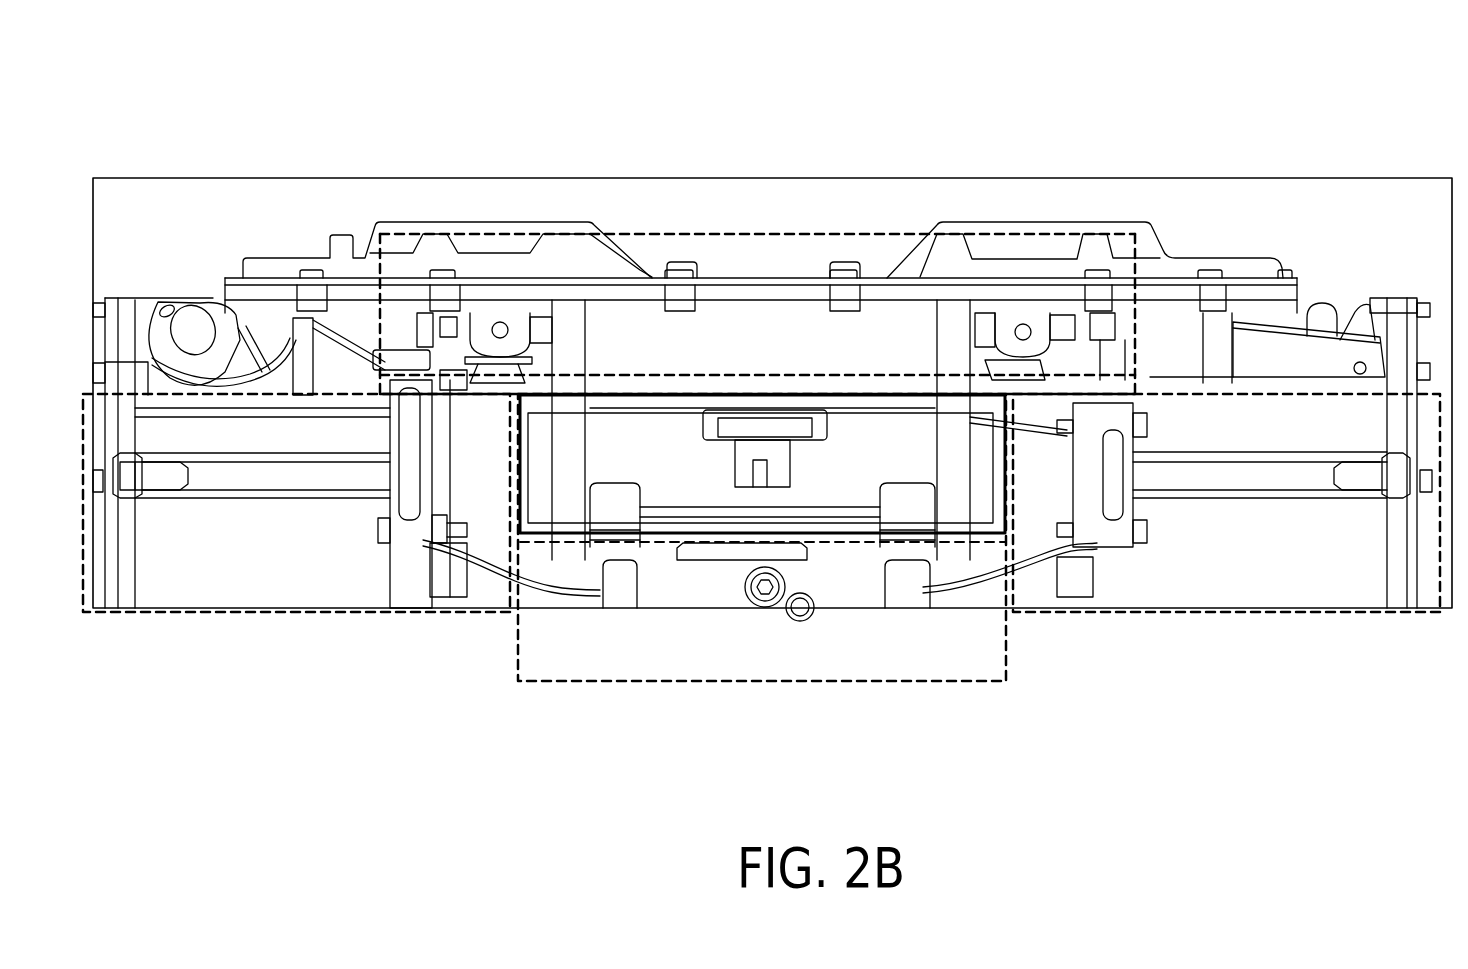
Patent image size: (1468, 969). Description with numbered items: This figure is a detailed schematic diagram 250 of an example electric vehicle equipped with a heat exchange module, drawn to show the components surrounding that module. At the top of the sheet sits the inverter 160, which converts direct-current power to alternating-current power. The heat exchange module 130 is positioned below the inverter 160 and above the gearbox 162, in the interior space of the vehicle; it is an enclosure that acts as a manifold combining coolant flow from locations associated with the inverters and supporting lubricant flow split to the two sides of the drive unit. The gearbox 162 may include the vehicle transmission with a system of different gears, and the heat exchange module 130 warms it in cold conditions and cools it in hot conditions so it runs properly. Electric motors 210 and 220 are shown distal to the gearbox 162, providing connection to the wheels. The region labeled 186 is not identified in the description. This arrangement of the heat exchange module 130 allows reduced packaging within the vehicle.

The detailed schematic diagram 250 is at (208, 72).
The inverter 160 is at (786, 233).
The frame 186 is at (761, 406).
The electric motor 210 is at (368, 612).
The electric motor 220 is at (1293, 614).
The gearbox 162 is at (865, 683).
The heat exchange module 130 is at (660, 515).